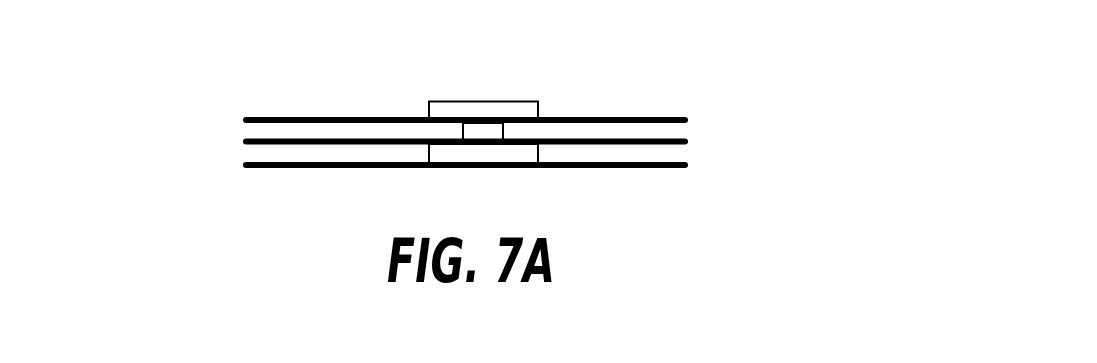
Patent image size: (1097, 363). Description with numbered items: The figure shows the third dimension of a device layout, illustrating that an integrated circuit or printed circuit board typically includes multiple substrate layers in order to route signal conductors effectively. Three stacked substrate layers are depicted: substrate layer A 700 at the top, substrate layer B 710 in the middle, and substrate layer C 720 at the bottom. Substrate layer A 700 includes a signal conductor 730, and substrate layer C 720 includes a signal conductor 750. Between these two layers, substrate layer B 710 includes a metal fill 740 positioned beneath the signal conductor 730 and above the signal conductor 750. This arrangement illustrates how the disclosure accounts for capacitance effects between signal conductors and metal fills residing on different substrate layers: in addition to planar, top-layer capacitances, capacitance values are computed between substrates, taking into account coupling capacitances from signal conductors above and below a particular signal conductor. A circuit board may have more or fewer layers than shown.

The substrate layer A 700 is at (262, 117).
The substrate layer B 710 is at (247, 140).
The substrate layer C 720 is at (247, 167).
The signal conductor 730 is at (538, 104).
The metal fill 740 is at (503, 133).
The signal conductor 750 is at (538, 148).